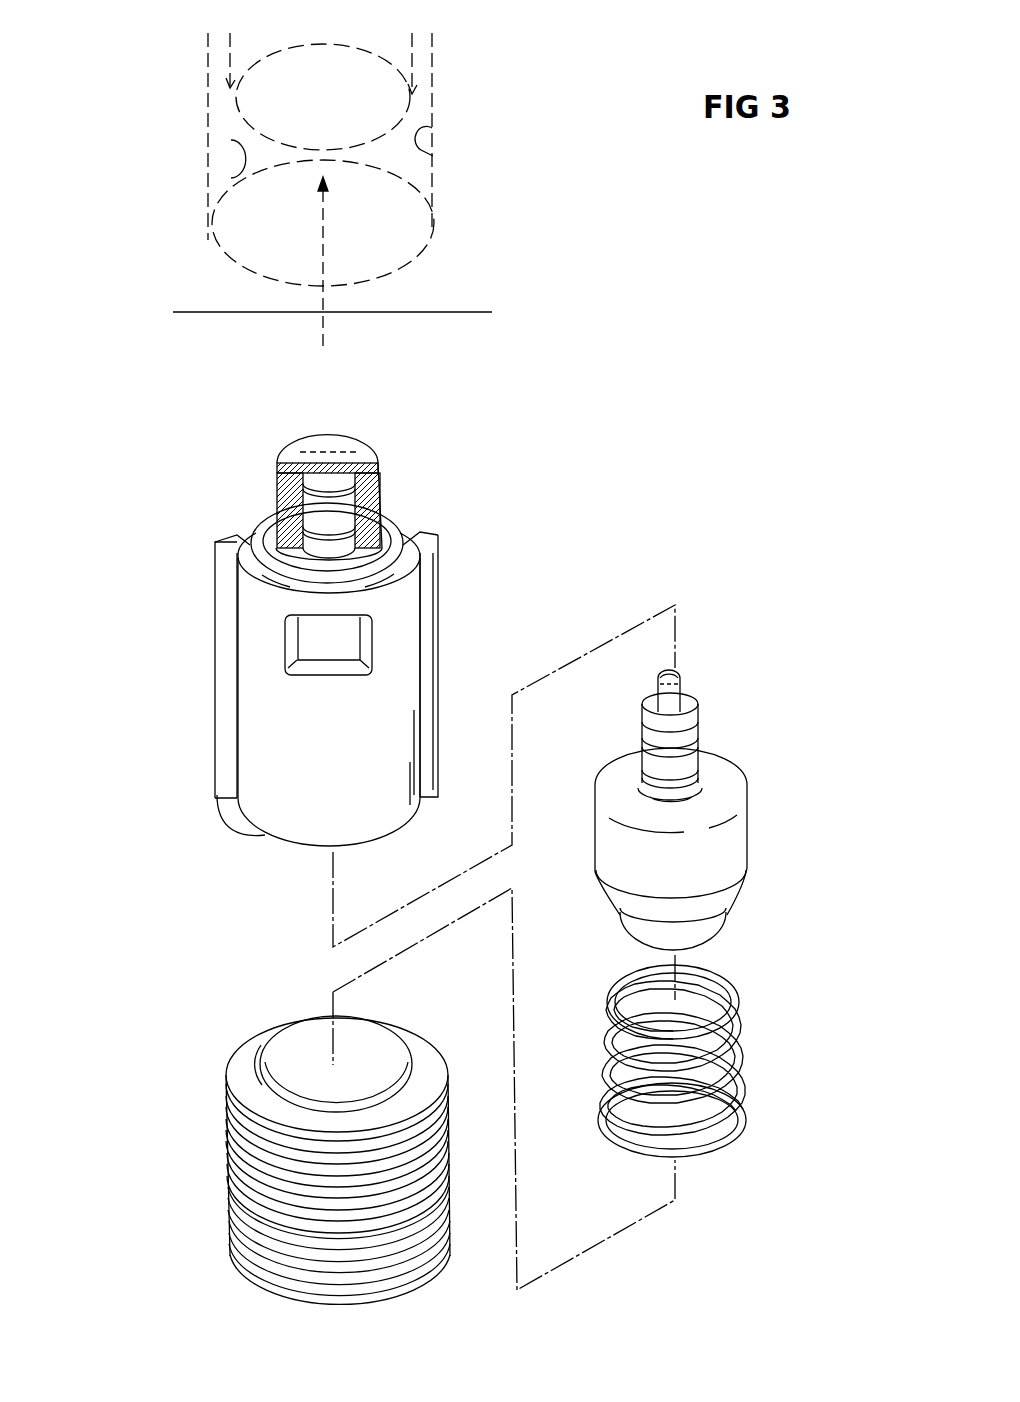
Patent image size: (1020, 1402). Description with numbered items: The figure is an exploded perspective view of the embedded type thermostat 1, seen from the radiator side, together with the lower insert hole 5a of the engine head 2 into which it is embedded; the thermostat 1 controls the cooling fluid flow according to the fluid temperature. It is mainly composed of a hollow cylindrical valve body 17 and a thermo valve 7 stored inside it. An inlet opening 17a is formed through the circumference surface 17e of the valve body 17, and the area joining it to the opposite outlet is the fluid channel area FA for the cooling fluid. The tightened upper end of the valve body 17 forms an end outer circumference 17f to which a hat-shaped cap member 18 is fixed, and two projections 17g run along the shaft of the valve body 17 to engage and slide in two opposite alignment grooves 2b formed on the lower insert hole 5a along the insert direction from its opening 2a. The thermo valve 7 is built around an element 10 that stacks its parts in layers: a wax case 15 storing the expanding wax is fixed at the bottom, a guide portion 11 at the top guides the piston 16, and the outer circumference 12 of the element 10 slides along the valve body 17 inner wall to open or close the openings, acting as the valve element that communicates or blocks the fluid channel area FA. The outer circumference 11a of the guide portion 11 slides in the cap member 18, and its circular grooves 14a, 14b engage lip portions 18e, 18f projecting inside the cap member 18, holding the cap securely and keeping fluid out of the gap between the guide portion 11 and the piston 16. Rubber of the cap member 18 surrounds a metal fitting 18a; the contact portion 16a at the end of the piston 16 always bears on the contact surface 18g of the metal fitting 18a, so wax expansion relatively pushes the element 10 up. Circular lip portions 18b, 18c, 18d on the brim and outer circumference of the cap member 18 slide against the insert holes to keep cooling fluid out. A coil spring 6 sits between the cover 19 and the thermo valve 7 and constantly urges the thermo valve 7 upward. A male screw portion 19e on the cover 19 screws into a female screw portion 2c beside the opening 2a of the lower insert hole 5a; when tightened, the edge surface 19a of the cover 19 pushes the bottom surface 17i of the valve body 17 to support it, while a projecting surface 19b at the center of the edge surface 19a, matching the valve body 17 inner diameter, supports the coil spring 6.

The embedded type thermostat 1 is at (597, 454).
The engine head 2 is at (327, 190).
The opening 2a is at (418, 250).
The alignment grooves 2b is at (210, 72).
The female screw portion 2c is at (445, 152).
The lower insert hole 5a is at (216, 183).
The coil spring 6 is at (740, 1050).
The thermo valve 7 is at (687, 814).
The element 10 is at (740, 880).
The guide portion 11 is at (690, 722).
The outer circumference of the guide portion 11a is at (641, 722).
The outer circumference of the element 12 is at (740, 828).
The circular groove 14a is at (695, 745).
The circular groove 14b is at (697, 783).
The wax case 15 is at (718, 921).
The piston 16 is at (672, 690).
The contact portion 16a is at (677, 670).
The valve body 17 is at (330, 645).
The inlet opening 17a is at (340, 663).
The circumference surface 17e is at (425, 580).
The outer circumference of the end 17f is at (385, 500).
The projections 17g is at (225, 705).
The bottom surface 17i is at (218, 806).
The cap member 18 is at (315, 467).
The metal fitting 18a is at (372, 482).
The lip portion 18b is at (276, 482).
The lip portion 18c is at (262, 530).
The lip portion 18d is at (264, 525).
The lip portion 18e is at (355, 470).
The lip portion 18f is at (383, 497).
The contact surface 18g is at (303, 462).
The cover 19 is at (291, 1126).
The edge surface 19a is at (247, 1075).
The projecting surface 19b is at (298, 1047).
The male screw portion 19e is at (226, 1145).
The fluid channel area FA is at (316, 641).